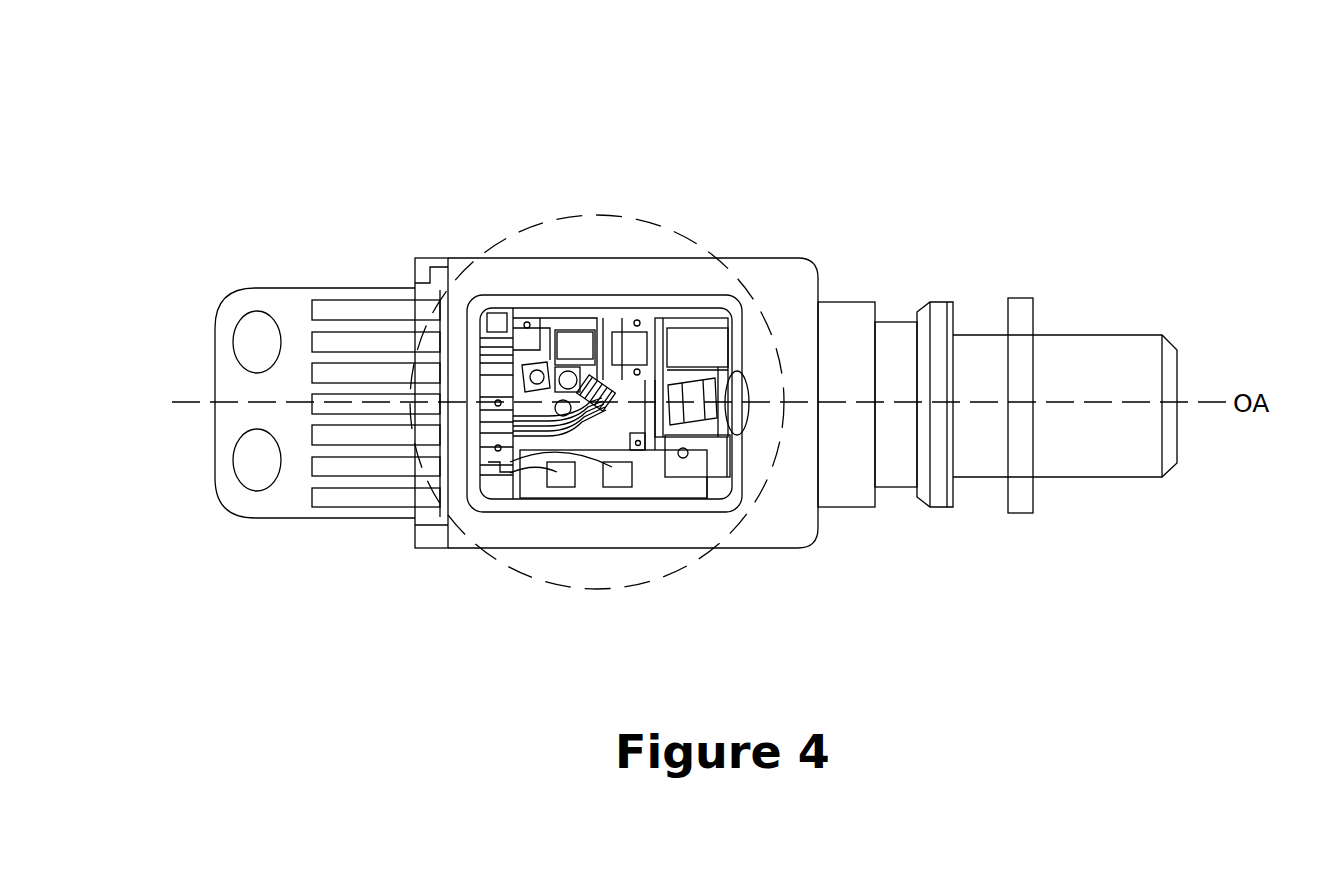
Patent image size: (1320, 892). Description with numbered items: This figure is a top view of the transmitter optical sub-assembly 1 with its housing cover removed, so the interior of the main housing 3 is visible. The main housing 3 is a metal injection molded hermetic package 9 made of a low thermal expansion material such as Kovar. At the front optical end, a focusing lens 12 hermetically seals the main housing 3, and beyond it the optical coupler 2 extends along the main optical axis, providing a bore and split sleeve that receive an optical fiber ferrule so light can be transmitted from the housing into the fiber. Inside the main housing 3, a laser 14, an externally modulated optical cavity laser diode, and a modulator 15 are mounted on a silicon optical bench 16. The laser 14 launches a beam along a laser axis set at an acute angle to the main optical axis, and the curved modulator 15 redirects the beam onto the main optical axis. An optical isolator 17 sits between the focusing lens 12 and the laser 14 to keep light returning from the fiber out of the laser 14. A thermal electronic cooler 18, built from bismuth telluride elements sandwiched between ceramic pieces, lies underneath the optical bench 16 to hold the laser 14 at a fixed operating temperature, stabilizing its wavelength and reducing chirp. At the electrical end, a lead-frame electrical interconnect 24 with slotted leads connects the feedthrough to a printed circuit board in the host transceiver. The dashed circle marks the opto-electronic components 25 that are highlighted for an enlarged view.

The transmitter optical sub-assembly 1 is at (485, 168).
The optical coupler 2 is at (1120, 335).
The main housing 3 is at (848, 302).
The hermetic package 9 is at (787, 523).
The focusing lens 12 is at (737, 393).
The laser 14 is at (590, 375).
The modulator 15 is at (612, 382).
The silicon optical bench 16 is at (604, 443).
The optical isolator 17 is at (688, 395).
The thermal electronic cooler 18 is at (645, 478).
The lead-frame electrical interconnect 24 is at (293, 307).
The opto-electronic components 25 is at (597, 215).